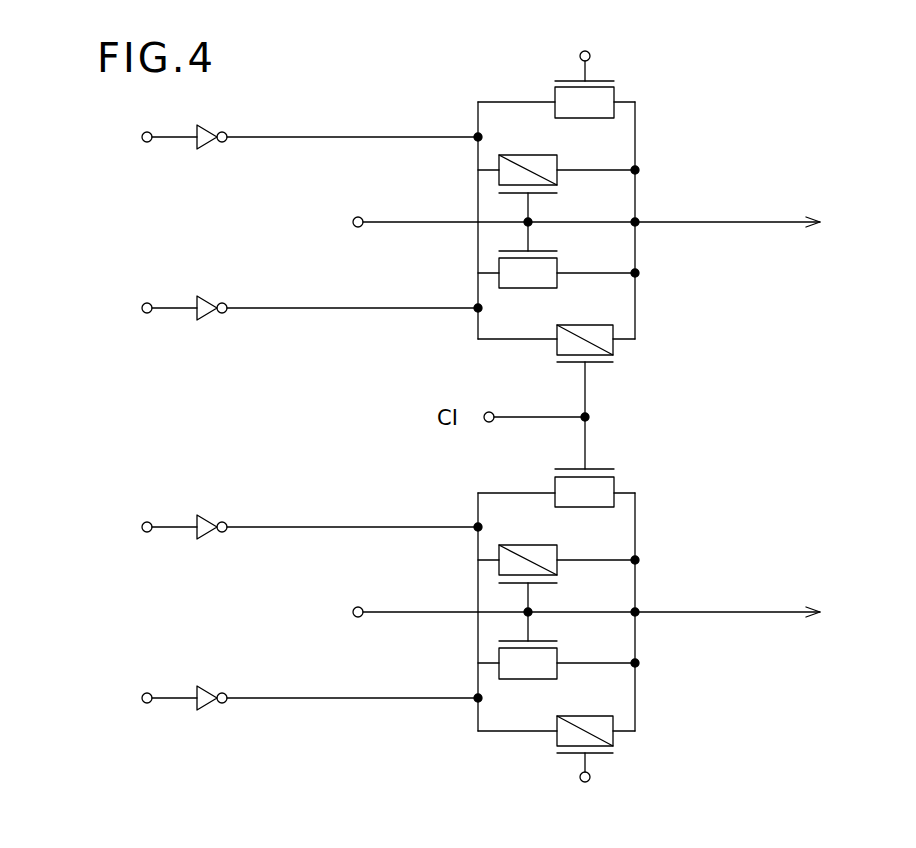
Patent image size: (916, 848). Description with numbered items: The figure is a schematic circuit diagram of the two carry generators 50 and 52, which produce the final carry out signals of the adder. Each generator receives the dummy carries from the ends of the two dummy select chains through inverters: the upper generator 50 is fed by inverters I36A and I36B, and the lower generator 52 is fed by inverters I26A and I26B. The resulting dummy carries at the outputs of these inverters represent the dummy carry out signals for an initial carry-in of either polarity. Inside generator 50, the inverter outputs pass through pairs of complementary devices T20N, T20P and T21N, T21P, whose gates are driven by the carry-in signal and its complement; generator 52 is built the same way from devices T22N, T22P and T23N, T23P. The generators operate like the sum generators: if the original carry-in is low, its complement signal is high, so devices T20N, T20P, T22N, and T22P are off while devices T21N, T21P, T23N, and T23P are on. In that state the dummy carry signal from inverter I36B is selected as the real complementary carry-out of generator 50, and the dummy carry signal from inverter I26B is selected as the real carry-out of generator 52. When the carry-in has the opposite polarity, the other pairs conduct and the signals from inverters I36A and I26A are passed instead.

The carry generator 50 is at (587, 217).
The carry generator 52 is at (578, 609).
The N-channel device T20N is at (608, 104).
The P-channel device T20P is at (512, 173).
The N-channel device T21N is at (512, 271).
The P-channel device T21P is at (605, 347).
The N-channel device T22N is at (597, 489).
The P-channel device T22P is at (512, 563).
The N-channel device T23N is at (513, 658).
The P-channel device T23P is at (604, 734).
The inverter I36A is at (208, 130).
The inverter I36B is at (204, 314).
The inverter I26A is at (207, 520).
The inverter I26B is at (208, 690).